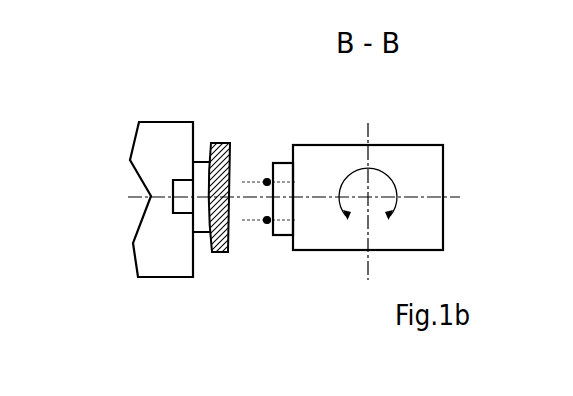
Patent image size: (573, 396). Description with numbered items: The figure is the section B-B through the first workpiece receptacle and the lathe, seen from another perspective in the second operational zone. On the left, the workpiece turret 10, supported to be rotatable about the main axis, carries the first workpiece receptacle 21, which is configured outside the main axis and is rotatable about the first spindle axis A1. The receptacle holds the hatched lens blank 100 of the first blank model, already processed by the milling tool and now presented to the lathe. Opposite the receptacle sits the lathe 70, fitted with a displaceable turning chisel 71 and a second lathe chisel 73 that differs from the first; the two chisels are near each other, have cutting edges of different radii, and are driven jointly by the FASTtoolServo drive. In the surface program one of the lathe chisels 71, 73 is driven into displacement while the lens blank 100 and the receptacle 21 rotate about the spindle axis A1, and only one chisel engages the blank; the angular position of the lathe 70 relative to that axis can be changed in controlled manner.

The workpiece turret 10 is at (155, 265).
The first workpiece receptacle 21 is at (178, 204).
The first spindle axis A1 is at (158, 195).
The lens blank 100 is at (216, 140).
The turning chisel 71 is at (266, 237).
The second lathe chisel 73 is at (266, 166).
The lathe 70 is at (412, 155).